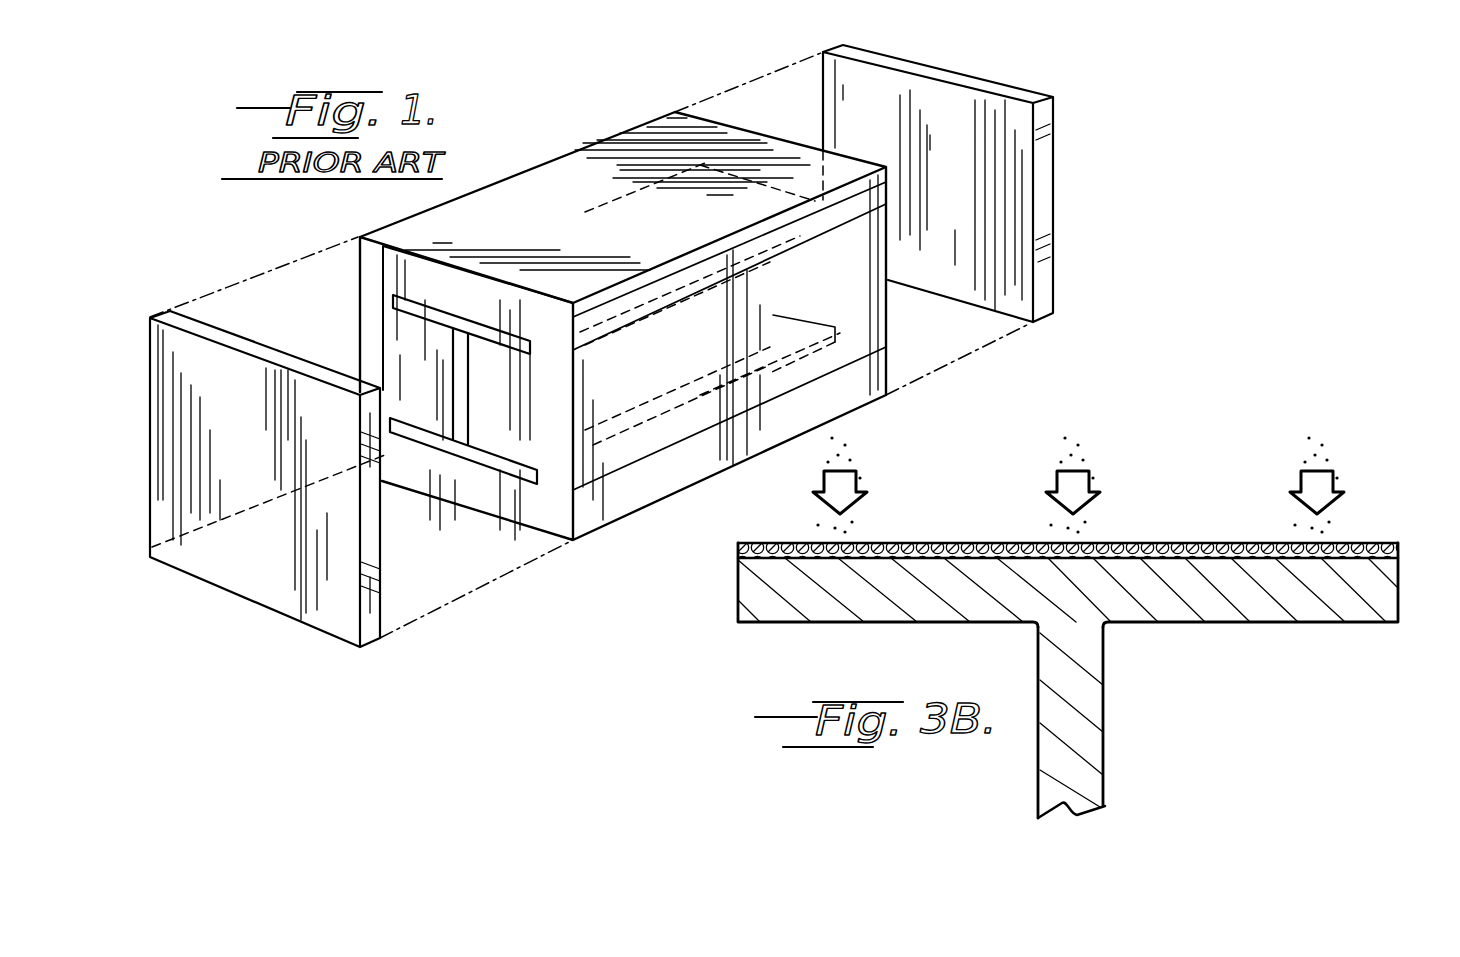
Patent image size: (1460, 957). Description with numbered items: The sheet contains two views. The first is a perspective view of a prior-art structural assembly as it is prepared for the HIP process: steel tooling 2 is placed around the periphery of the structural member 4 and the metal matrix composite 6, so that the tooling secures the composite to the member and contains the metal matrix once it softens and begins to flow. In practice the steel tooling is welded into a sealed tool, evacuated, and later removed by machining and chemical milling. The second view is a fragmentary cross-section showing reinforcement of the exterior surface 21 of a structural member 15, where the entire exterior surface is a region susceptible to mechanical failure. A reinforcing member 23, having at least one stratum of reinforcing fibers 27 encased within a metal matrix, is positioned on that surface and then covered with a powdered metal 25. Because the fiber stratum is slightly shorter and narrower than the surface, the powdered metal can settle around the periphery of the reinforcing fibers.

In FIG. 1, the steel tooling 2 is at (625, 362).
In FIG. 1, the structural member 4 is at (596, 357).
In FIG. 1, the metal matrix composite 6 is at (463, 318).
In FIG. 3B, the structural member 15 is at (1104, 634).
In FIG. 3B, the exterior surface 21 is at (1130, 562).
In FIG. 3B, the reinforcing member 23 is at (1068, 608).
In FIG. 3B, the powdered metal 25 is at (857, 461).
In FIG. 3B, the reinforcing fibers 27 is at (1253, 562).